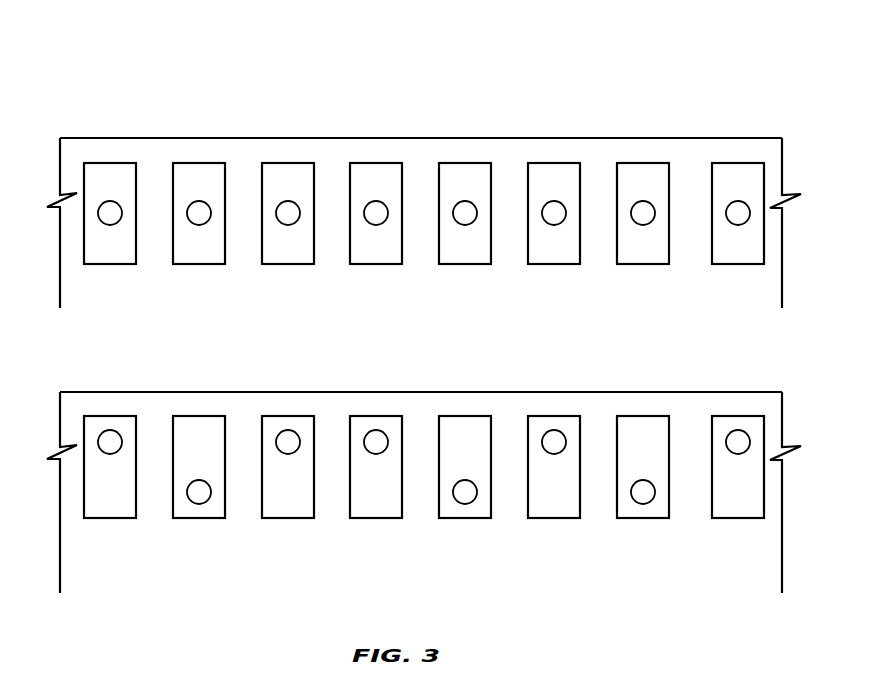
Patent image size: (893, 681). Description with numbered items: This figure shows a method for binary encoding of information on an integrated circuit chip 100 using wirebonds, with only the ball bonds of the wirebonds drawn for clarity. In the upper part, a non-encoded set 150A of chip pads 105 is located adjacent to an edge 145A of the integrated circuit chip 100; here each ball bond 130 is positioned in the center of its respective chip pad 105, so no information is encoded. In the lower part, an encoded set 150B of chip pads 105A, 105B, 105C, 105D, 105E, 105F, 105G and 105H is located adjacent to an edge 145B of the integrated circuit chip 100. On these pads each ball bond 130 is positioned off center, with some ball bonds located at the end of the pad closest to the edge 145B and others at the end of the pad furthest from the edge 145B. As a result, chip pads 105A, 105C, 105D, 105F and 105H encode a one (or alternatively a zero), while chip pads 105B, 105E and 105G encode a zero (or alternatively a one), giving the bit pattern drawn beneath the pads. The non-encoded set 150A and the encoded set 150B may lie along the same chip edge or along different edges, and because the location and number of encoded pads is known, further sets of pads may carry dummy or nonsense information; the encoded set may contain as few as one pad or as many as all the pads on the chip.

The integrated circuit chip 100 is at (424, 337).
The chip pad 105 is at (97, 252).
The chip pad 105A is at (91, 506).
The chip pad 105B is at (180, 450).
The chip pad 105C is at (269, 506).
The chip pad 105D is at (357, 506).
The chip pad 105E is at (446, 450).
The chip pad 105F is at (535, 506).
The chip pad 105G is at (624, 450).
The chip pad 105H is at (719, 506).
The ball bond 130 is at (110, 213).
The edge 145A is at (155, 138).
The edge 145B is at (155, 392).
The non-encoded set 150A is at (424, 195).
The encoded set 150B is at (424, 467).